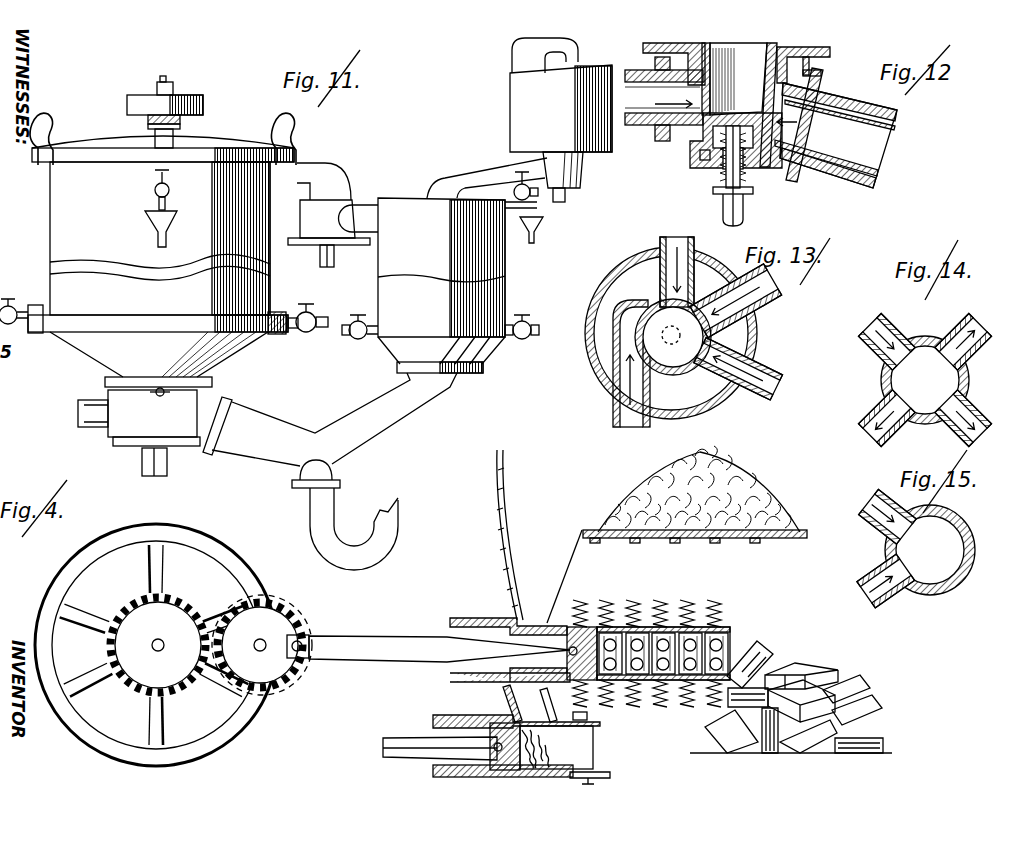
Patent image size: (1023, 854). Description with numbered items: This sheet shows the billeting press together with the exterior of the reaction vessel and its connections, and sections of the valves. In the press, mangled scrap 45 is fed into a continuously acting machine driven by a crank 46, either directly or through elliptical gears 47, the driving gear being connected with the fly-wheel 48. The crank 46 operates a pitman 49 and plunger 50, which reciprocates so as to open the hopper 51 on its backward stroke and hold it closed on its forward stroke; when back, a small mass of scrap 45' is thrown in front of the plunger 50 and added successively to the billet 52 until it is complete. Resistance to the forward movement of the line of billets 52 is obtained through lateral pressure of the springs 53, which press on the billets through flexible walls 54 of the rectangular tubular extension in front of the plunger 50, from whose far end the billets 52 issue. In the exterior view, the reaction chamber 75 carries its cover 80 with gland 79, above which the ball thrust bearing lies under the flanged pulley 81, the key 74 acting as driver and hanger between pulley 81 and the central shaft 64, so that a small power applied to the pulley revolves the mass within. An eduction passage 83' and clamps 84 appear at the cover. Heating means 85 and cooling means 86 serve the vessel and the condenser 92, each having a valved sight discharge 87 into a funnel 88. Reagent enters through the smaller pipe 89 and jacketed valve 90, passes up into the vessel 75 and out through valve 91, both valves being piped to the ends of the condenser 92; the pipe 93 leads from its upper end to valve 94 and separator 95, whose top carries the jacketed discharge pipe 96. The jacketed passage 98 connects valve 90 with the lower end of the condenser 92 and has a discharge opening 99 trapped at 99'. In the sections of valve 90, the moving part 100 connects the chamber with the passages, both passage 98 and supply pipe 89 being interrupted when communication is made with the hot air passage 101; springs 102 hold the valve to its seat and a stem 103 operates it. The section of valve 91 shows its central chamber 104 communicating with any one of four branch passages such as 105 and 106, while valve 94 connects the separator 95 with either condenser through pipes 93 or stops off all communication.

In FIG. 4, the mangled scrap 45 is at (687, 489).
In FIG. 4, the small mass of scrap 45' is at (556, 747).
In FIG. 4, the crank 46 is at (305, 635).
In FIG. 4, the elliptical gears 47 is at (212, 645).
In FIG. 4, the fly-wheel 48 is at (234, 548).
In FIG. 4, the pitman 49 is at (395, 637).
In FIG. 4, the plunger 50 is at (563, 625).
In FIG. 4, the hopper 51 is at (652, 586).
In FIG. 4, the billet 52 is at (773, 657).
In FIG. 4, the springs 53 is at (727, 617).
In FIG. 4, the flexible walls 54 is at (733, 627).
In FIG. 11, the central shaft 64 is at (160, 80).
In FIG. 11, the key 74 is at (172, 85).
In FIG. 11, the reaction chamber 75 is at (147, 261).
In FIG. 11, the gland 79 is at (148, 128).
In FIG. 11, the cover 80 is at (194, 118).
In FIG. 11, the flanged pulley 81 is at (203, 107).
In FIG. 11, the outlet elbow 83' is at (323, 181).
In FIG. 11, the clamps 84 is at (40, 118).
In FIG. 11, the heating means 85 is at (333, 336).
In FIG. 11, the cooling means 86 is at (468, 344).
In FIG. 11, the valved sight discharge 87 is at (153, 184).
In FIG. 11, the funnel 88 is at (147, 218).
In FIG. 11, the reagent supply pipe 89 is at (80, 414).
In FIG. 12, the reagent supply pipe 89 is at (664, 99).
In FIG. 13, the reagent supply pipe 89 is at (630, 374).
In FIG. 11, the jacketed valve 90 is at (170, 421).
In FIG. 12, the jacketed valve 90 is at (700, 166).
In FIG. 13, the jacketed valve 90 is at (672, 334).
In FIG. 11, the valve 91 is at (333, 233).
In FIG. 14, the valve 91 is at (968, 380).
In FIG. 11, the condenser 92 is at (441, 281).
In FIG. 11, the pipe 93 is at (468, 176).
In FIG. 15, the pipe 93 is at (868, 502).
In FIG. 11, the valve 94 is at (582, 178).
In FIG. 15, the valve 94 is at (930, 550).
In FIG. 11, the separator 95 is at (561, 108).
In FIG. 11, the jacketed discharge pipe 96 is at (512, 54).
In FIG. 11, the passage 98 is at (334, 419).
In FIG. 12, the passage 98 is at (836, 128).
In FIG. 13, the passage 98 is at (733, 321).
In FIG. 11, the discharge opening 99 is at (341, 470).
In FIG. 11, the trap 99' is at (354, 529).
In FIG. 12, the moving part of the valve 100 is at (736, 105).
In FIG. 13, the moving part of the valve 100 is at (673, 337).
In FIG. 12, the hot air passage 101 is at (687, 190).
In FIG. 12, the springs 102 is at (718, 182).
In FIG. 11, the stem 103 is at (173, 471).
In FIG. 12, the stem 103 is at (744, 204).
In FIG. 14, the valve body 104 is at (925, 380).
In FIG. 14, the branch 105 is at (881, 425).
In FIG. 14, the branch 106 is at (903, 338).